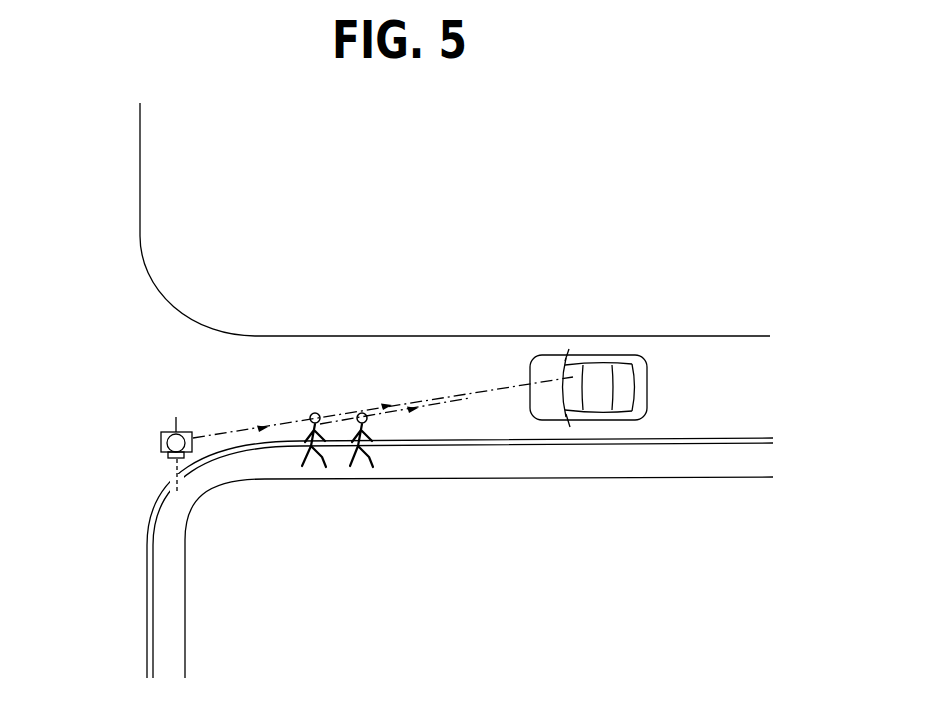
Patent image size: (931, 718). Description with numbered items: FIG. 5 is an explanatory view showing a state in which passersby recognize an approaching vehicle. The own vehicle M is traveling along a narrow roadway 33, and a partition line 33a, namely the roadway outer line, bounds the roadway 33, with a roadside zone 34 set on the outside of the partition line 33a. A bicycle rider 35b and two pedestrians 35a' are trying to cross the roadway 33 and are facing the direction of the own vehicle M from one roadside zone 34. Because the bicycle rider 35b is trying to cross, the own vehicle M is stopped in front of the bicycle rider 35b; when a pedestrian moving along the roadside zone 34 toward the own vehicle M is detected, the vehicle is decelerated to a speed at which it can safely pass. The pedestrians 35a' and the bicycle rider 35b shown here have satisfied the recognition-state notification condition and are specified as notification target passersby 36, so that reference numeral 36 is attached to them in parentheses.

The roadway 33 is at (362, 376).
The partition line 33a is at (733, 438).
The roadside zone 34 is at (688, 467).
The bicycle rider 35b is at (160, 455).
The pedestrian 35a' is at (354, 476).
The notification target passerby 36 is at (242, 490).
The own vehicle M is at (647, 388).